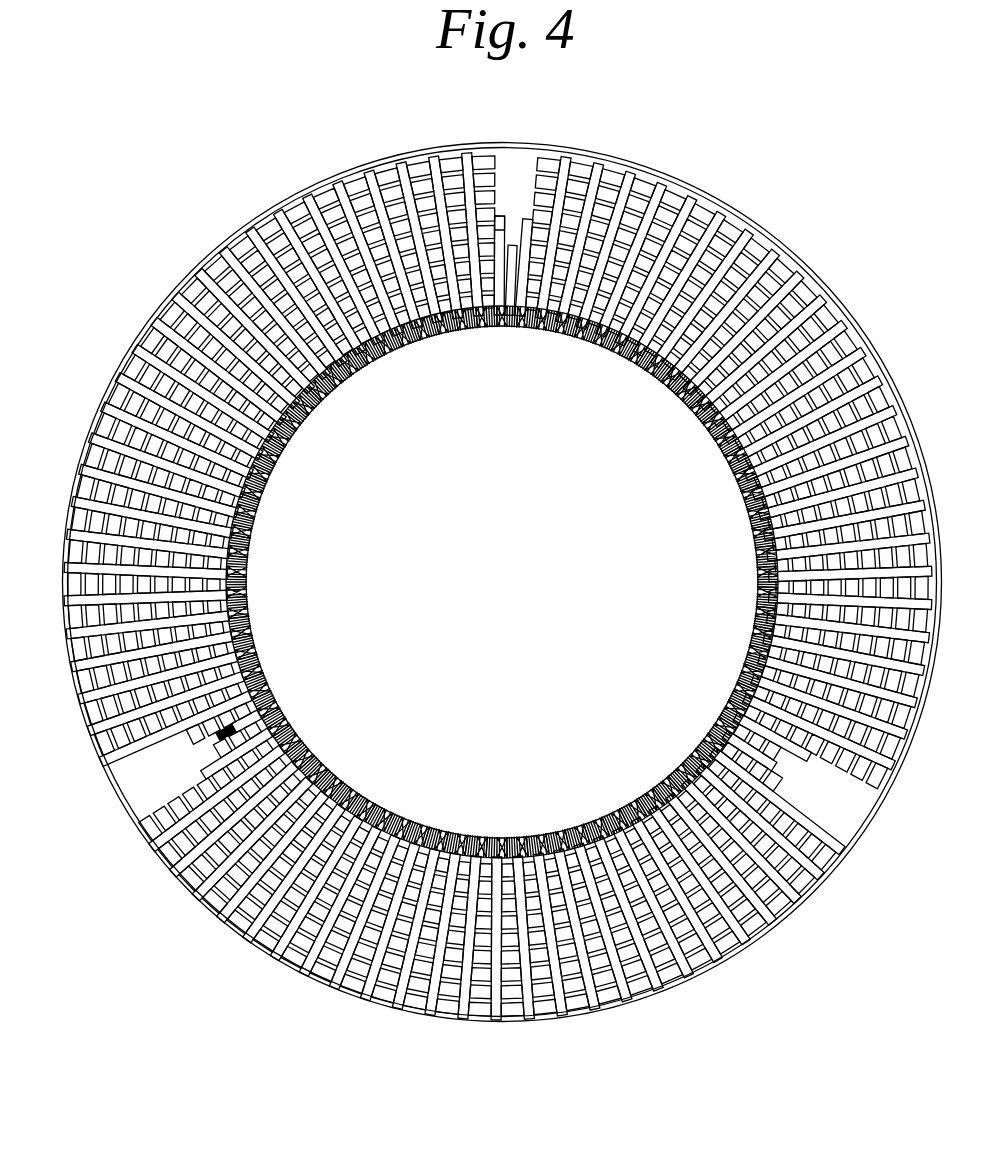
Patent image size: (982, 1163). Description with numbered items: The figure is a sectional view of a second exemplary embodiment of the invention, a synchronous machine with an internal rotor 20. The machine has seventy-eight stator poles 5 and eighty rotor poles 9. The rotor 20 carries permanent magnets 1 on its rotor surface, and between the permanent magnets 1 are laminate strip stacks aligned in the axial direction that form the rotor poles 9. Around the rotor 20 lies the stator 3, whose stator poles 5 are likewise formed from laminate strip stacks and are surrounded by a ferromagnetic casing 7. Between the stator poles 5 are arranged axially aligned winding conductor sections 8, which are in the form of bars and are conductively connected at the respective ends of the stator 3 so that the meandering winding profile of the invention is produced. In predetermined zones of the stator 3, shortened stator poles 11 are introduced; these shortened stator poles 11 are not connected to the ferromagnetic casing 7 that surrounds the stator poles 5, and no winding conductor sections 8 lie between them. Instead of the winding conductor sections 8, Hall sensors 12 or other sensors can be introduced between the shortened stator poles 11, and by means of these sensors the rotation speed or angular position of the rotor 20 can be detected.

The permanent magnet 1 is at (494, 295).
The stator 3 is at (325, 159).
The stator pole 5 is at (754, 319).
The ferromagnetic casing 7 is at (695, 188).
The winding conductor section 8 is at (552, 201).
The rotor pole 9 is at (531, 297).
The shortened stator pole 11 is at (509, 164).
The Hall sensor 12 is at (529, 213).
The rotor 20 is at (745, 583).